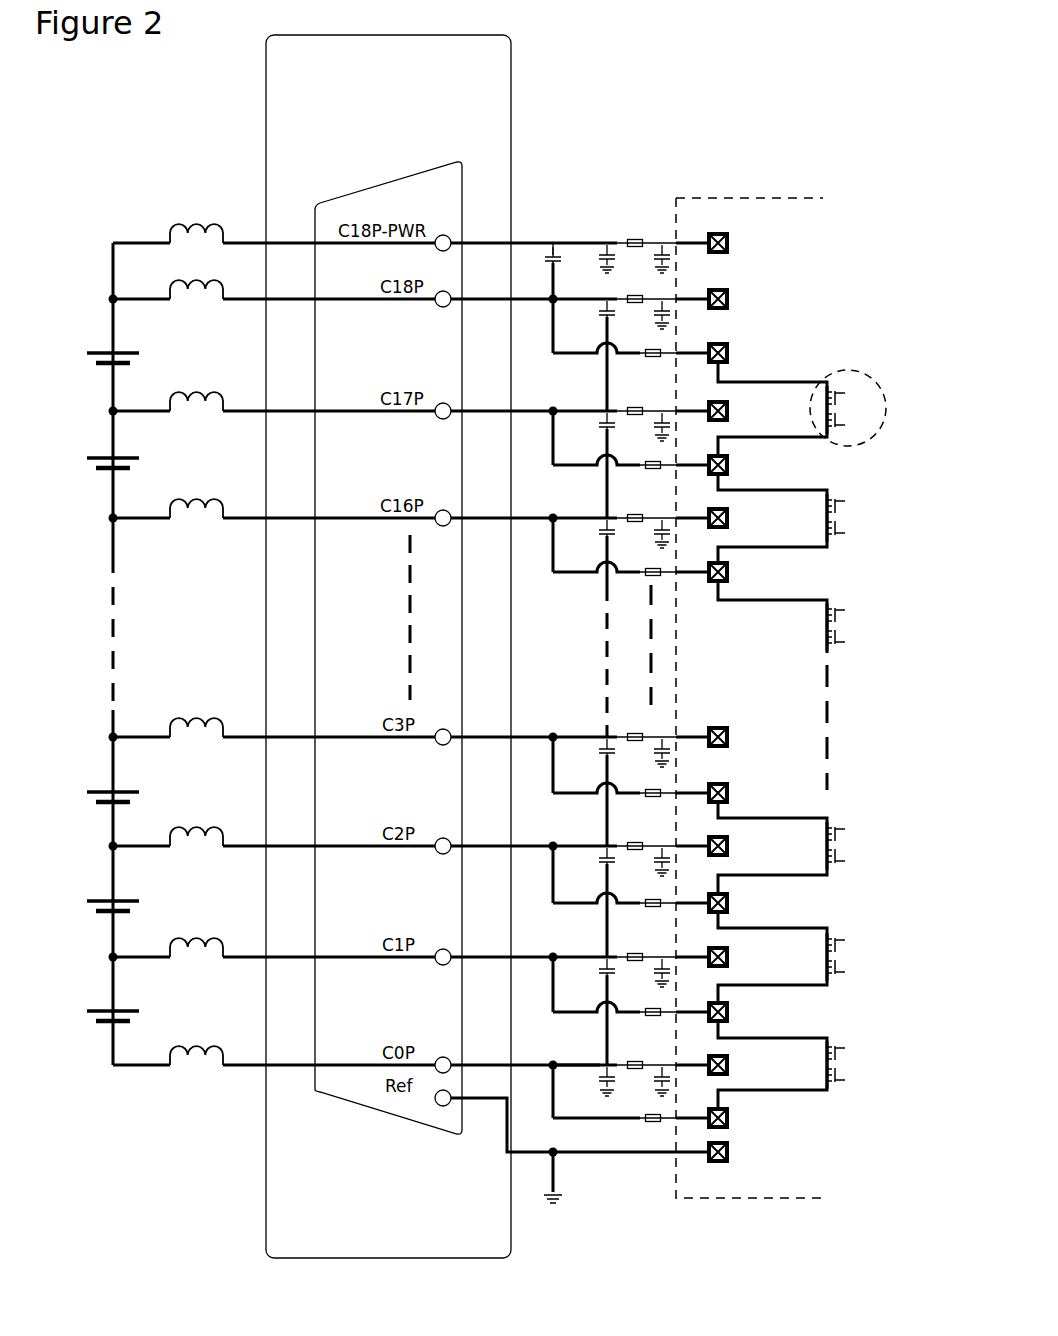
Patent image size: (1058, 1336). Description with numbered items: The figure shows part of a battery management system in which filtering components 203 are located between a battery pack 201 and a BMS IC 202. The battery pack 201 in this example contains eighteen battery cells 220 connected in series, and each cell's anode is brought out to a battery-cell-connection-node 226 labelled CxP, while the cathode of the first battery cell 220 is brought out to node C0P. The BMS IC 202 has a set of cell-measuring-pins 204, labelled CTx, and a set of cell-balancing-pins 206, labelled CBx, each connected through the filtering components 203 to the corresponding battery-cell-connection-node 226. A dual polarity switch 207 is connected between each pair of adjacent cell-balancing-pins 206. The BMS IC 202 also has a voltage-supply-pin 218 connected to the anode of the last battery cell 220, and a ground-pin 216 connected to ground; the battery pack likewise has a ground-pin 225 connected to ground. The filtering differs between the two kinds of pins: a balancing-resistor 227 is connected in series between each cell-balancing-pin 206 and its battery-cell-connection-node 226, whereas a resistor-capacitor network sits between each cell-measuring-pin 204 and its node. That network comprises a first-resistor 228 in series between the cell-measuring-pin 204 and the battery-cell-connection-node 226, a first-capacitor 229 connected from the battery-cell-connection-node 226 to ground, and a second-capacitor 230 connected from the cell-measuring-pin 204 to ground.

The battery pack 201 is at (155, 180).
The BMS IC 202 is at (771, 198).
The filtering components 203 is at (672, 180).
The cell-measuring-pin 204 is at (728, 302).
The cell-balancing-pin 206 is at (728, 351).
The dual polarity switch 207 is at (884, 409).
The ground-pin 216 is at (714, 1162).
The voltage-supply-pin 218 is at (728, 252).
The battery cell 220 is at (108, 350).
The ground-pin 225 is at (440, 1105).
The battery-cell-connection-node 226 is at (437, 306).
The balancing-resistor 227 is at (650, 1128).
The first-resistor 228 is at (642, 1063).
The first-capacitor 229 is at (590, 1069).
The second-capacitor 230 is at (674, 1078).